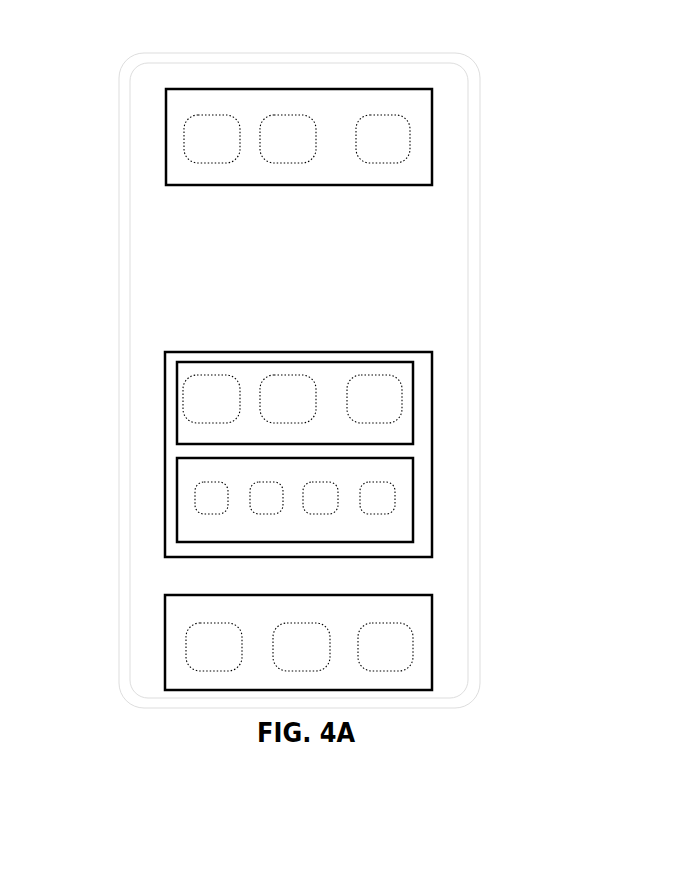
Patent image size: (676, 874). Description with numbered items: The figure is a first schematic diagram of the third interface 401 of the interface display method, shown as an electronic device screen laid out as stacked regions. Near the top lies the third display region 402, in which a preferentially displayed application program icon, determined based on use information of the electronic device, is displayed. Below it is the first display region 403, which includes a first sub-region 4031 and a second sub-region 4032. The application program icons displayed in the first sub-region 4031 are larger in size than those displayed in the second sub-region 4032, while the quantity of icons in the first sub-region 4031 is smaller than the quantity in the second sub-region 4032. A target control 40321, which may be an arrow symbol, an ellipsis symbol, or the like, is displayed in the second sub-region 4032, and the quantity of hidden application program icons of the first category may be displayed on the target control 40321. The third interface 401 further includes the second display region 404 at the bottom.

The third interface 401 is at (292, 72).
The third display region 402 is at (172, 147).
The first display region 403 is at (165, 433).
The first sub-region 4031 is at (187, 373).
The second sub-region 4032 is at (192, 528).
The target control 40321 is at (507, 463).
The second display region 404 is at (172, 647).